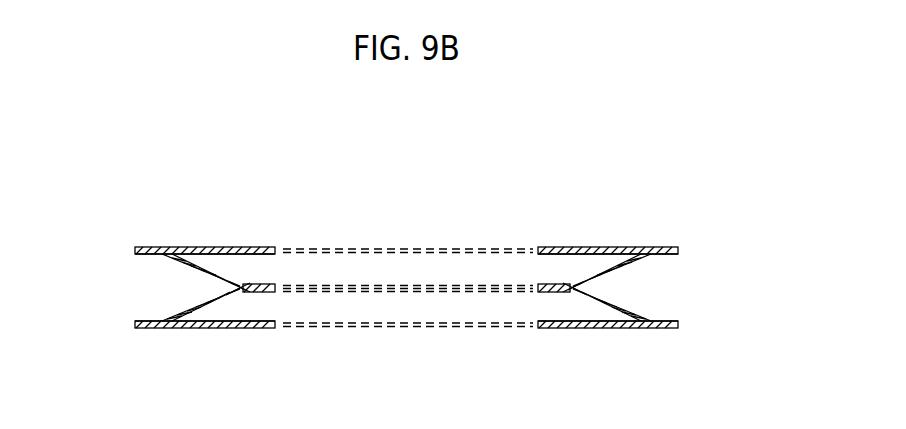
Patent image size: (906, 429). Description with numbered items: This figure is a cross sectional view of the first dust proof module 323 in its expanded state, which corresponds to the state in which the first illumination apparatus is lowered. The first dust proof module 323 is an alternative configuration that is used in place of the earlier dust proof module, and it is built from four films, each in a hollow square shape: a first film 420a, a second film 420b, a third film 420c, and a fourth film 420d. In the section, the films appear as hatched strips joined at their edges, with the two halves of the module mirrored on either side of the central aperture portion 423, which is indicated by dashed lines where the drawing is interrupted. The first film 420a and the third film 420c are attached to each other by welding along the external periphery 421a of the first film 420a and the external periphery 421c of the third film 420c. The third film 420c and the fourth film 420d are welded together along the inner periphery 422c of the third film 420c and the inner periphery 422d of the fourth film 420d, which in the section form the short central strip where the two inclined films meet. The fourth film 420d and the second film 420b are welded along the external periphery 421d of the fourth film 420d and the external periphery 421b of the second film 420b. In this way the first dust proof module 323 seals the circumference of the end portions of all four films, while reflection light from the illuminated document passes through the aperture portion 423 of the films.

The first dust proof module 323 is at (430, 167).
The external periphery of the first film 421a is at (153, 248).
The external periphery of the second film 421b is at (148, 328).
The external periphery of the third film 421c is at (140, 255).
The external periphery of the fourth film 421d is at (138, 321).
The first film 420a is at (608, 249).
The second film 420b is at (603, 329).
The third film 420c is at (633, 253).
The fourth film 420d is at (628, 329).
The inner periphery of the third film 422c is at (258, 287).
The inner periphery of the fourth film 422d is at (262, 292).
The aperture portion 423 is at (405, 252).